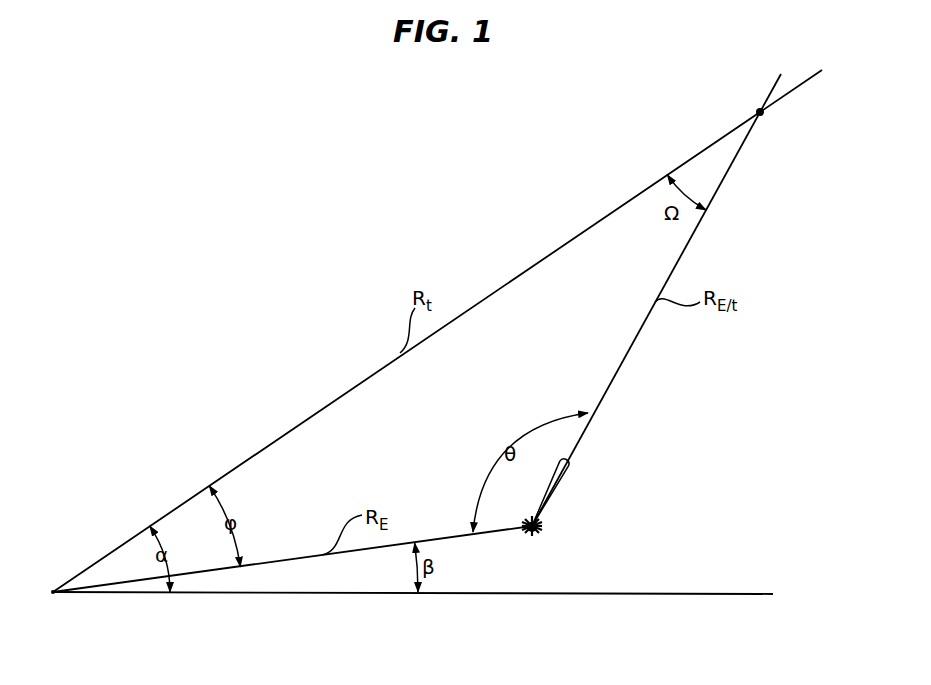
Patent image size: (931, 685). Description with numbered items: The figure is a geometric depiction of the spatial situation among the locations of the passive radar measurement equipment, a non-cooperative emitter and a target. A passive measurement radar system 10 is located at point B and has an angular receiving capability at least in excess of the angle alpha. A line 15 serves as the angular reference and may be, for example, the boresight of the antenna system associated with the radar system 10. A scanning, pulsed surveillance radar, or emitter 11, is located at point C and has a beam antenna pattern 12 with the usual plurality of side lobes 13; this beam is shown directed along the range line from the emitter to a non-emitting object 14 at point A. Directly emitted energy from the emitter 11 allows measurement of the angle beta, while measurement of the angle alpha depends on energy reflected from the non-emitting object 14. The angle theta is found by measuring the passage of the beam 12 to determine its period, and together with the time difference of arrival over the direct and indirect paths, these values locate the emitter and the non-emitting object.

The passive measurement radar system 10 is at (53, 592).
The scanning, pulsed surveillance radar 11 is at (540, 522).
The beam antenna pattern 12 is at (568, 478).
The side lobes 13 is at (540, 532).
The non-emitting object 14 is at (757, 109).
The line 15 is at (710, 594).